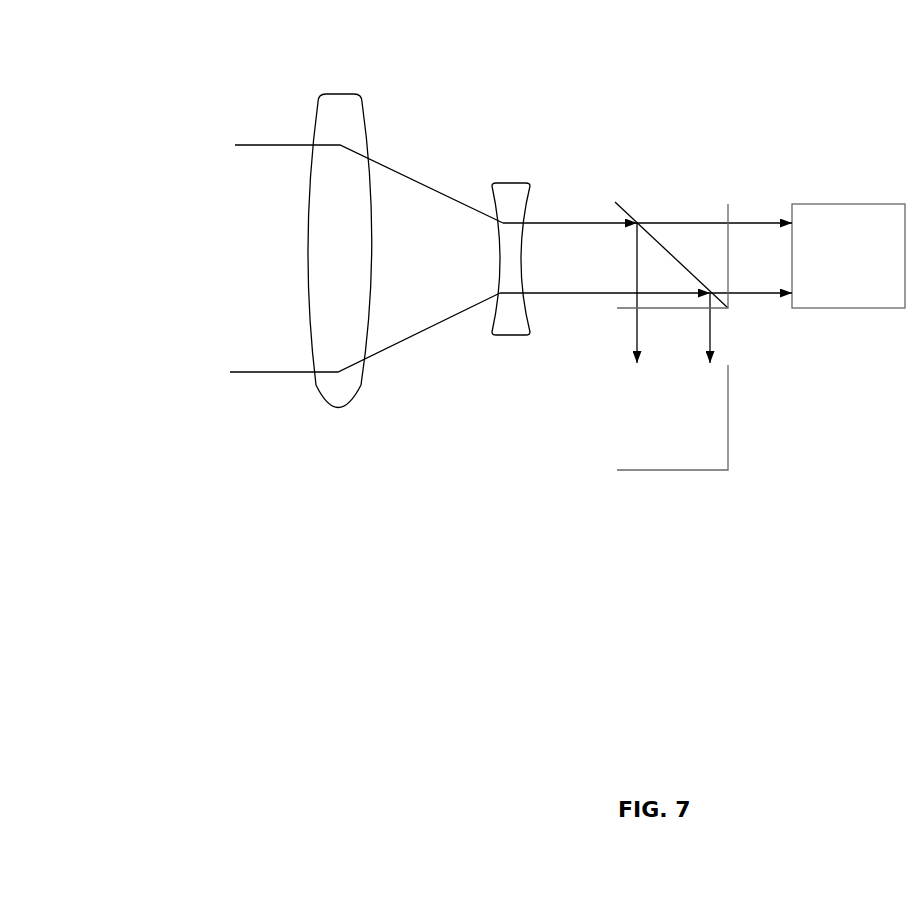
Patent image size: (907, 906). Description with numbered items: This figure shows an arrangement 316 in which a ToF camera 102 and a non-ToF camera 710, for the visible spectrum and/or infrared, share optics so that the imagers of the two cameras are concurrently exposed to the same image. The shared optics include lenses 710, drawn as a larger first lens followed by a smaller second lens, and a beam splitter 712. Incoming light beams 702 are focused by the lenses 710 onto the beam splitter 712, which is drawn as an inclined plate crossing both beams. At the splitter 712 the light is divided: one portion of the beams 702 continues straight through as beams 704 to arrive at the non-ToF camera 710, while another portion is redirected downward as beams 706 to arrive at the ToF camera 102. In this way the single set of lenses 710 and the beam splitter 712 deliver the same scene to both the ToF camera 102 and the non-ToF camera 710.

The optical system / imaging assembly 316 is at (199, 86).
The lenses / non-ToF camera 710 is at (361, 97).
The light beams 702 is at (567, 210).
The beam splitter 712 is at (663, 203).
The beams 704 is at (762, 222).
The beams 706 is at (637, 335).
The ToF camera 102 is at (672, 337).